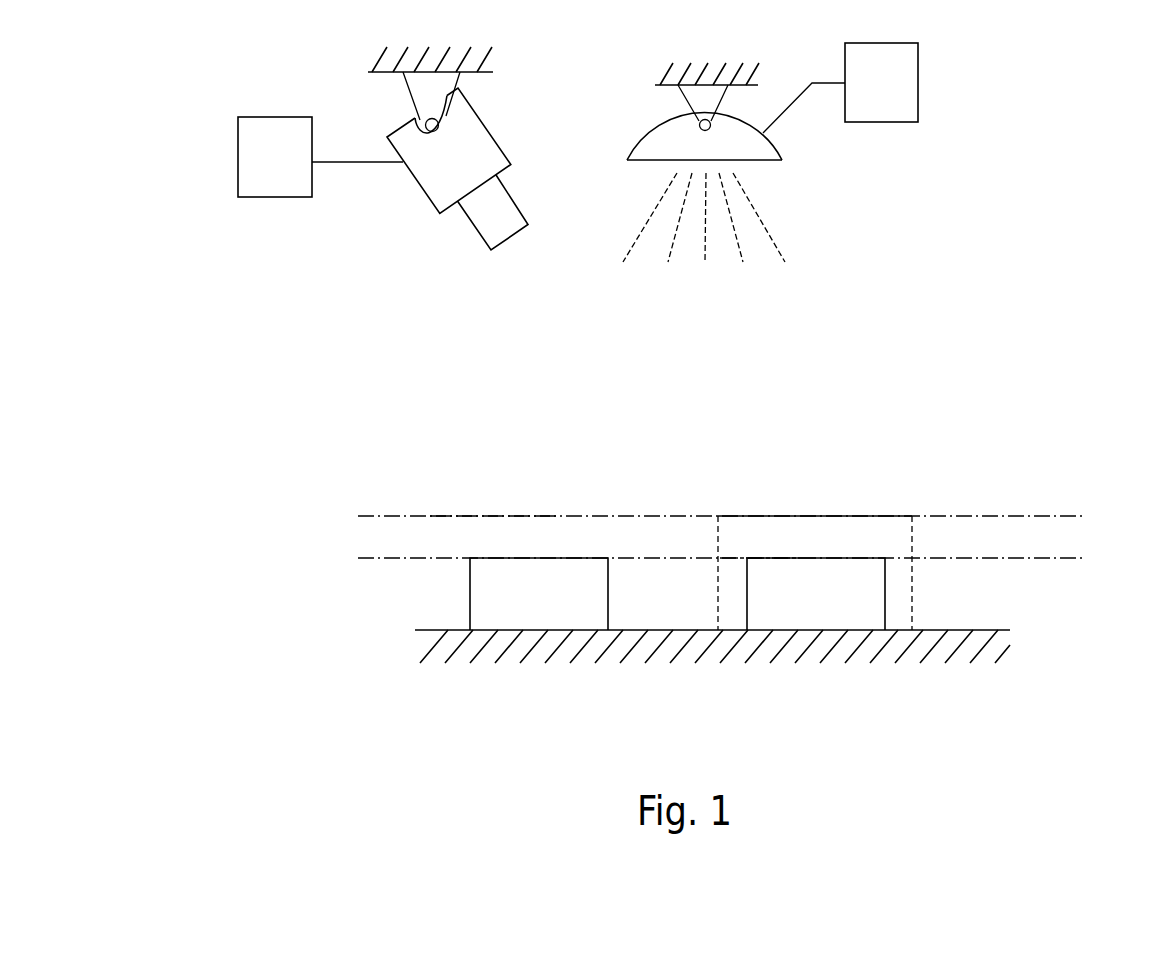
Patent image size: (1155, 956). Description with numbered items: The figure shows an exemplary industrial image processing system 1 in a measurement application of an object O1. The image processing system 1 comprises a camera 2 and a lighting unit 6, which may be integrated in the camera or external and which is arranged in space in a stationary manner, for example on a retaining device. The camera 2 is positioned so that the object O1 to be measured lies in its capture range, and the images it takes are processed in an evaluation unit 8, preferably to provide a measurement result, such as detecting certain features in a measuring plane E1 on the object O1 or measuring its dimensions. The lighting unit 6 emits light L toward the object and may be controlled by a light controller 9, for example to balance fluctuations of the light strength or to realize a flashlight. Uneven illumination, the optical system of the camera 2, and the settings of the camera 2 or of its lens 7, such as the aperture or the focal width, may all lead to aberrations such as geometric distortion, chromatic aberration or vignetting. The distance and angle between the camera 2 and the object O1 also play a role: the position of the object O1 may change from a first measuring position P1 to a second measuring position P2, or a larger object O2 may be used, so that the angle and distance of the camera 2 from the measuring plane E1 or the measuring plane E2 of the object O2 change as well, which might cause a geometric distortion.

The industrial image processing system 1 is at (392, 268).
The camera 2 is at (442, 175).
The lighting unit 6 is at (668, 138).
The lens 7 is at (490, 220).
The evaluation unit 8 is at (238, 158).
The light controller 9 is at (920, 98).
The light L is at (762, 217).
The measuring plane E1 is at (748, 555).
The measuring plane E2 is at (749, 515).
The object O1 is at (512, 582).
The larger object O2 is at (862, 533).
The first measuring position P1 is at (752, 542).
The second measuring position P2 is at (497, 503).